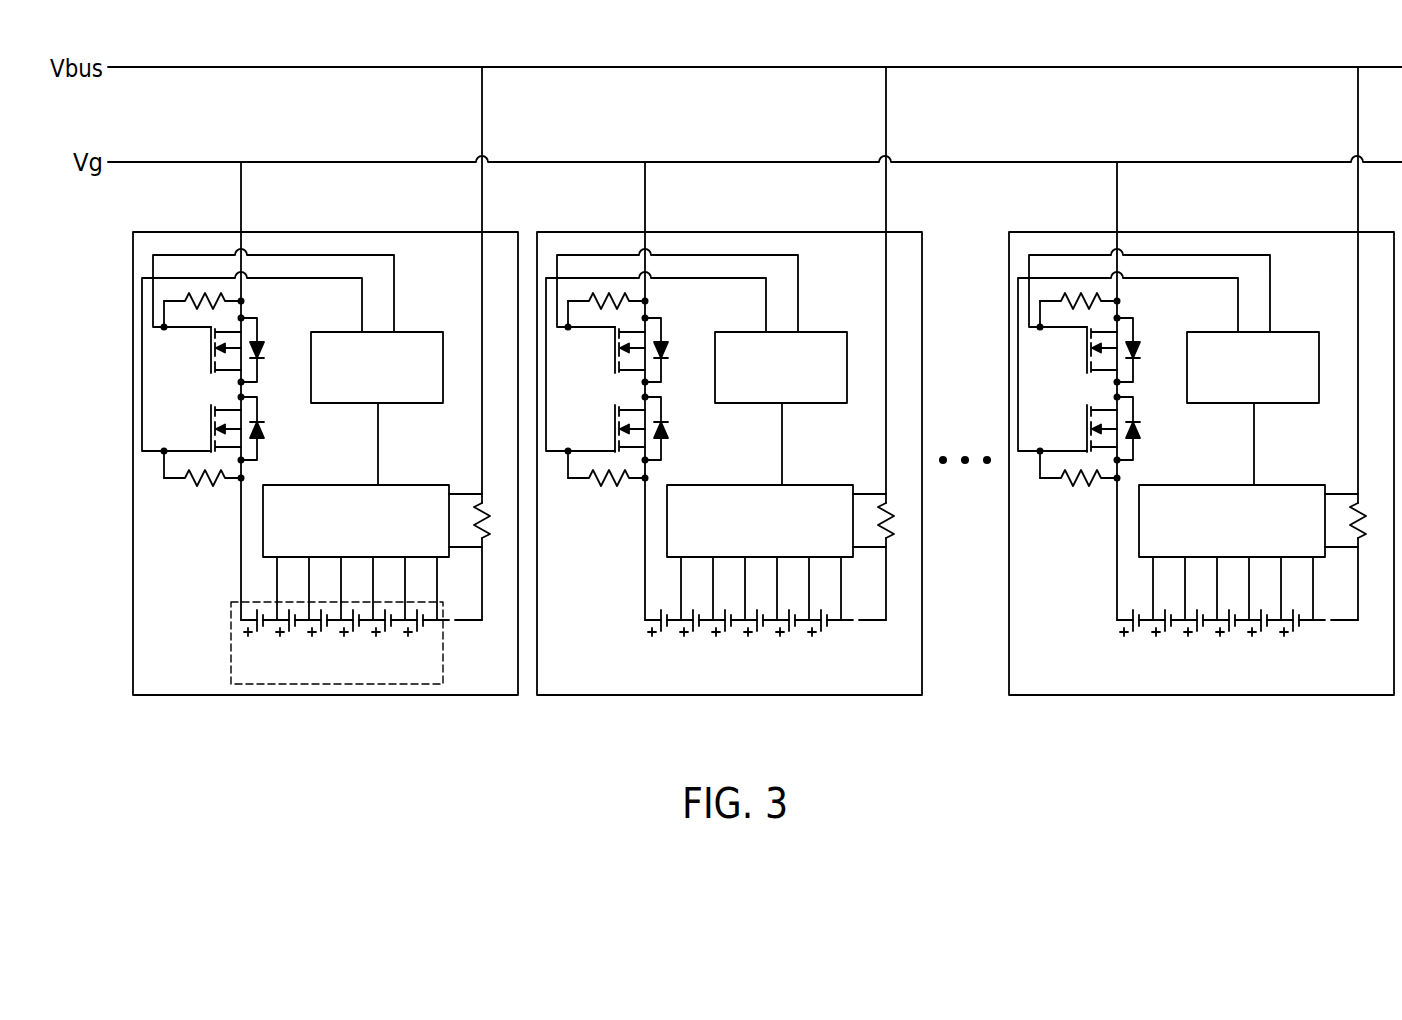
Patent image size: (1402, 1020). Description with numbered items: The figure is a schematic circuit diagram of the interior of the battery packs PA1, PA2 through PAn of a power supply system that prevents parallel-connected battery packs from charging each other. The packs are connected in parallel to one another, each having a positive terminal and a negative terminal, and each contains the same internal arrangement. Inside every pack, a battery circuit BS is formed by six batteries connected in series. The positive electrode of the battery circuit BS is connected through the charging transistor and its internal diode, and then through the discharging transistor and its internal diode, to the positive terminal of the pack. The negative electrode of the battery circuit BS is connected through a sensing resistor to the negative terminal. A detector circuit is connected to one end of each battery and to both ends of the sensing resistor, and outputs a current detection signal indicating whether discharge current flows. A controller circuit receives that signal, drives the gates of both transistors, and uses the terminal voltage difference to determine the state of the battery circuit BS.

The battery circuit BS is at (357, 658).
The battery pack PA1 is at (325, 417).
The battery pack PA2 is at (729, 417).
The battery pack PAn is at (1201, 415).